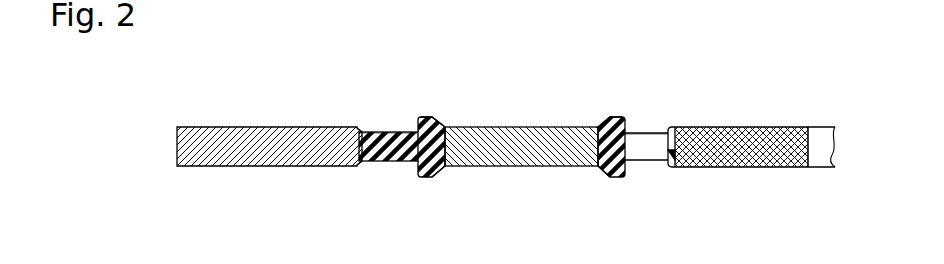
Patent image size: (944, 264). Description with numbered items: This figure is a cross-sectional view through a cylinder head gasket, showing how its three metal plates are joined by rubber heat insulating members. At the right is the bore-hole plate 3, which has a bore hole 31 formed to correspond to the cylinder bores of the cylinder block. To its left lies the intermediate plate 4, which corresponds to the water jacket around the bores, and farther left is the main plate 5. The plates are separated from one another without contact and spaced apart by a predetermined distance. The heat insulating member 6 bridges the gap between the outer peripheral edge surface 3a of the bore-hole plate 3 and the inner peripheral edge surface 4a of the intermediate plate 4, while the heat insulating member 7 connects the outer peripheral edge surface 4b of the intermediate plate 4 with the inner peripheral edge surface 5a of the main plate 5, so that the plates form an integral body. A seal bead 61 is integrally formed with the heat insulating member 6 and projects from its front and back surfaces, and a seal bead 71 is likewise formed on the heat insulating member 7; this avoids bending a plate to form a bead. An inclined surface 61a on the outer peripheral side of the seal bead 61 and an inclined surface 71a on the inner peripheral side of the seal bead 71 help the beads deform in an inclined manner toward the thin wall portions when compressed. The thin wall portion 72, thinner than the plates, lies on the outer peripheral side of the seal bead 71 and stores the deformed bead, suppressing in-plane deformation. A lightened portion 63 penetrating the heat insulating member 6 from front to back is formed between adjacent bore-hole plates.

The bore-hole plate 3 is at (748, 127).
The outer peripheral edge surface 3a is at (666, 160).
The bore hole 31 is at (823, 160).
The intermediate plate 4 is at (526, 127).
The inner peripheral edge surface 4a is at (607, 167).
The outer peripheral edge surface 4b is at (433, 169).
The main plate 5 is at (273, 127).
The inner peripheral edge surface 5a is at (363, 163).
The heat insulating member 6 is at (638, 108).
The seal bead 61 is at (616, 178).
The inclined surface 61a is at (609, 120).
The lightened portion 63 is at (642, 152).
The heat insulating member 7 is at (402, 108).
The seal bead 71 is at (424, 178).
The inclined surface 71a is at (433, 117).
The thin wall portion 72 is at (384, 162).